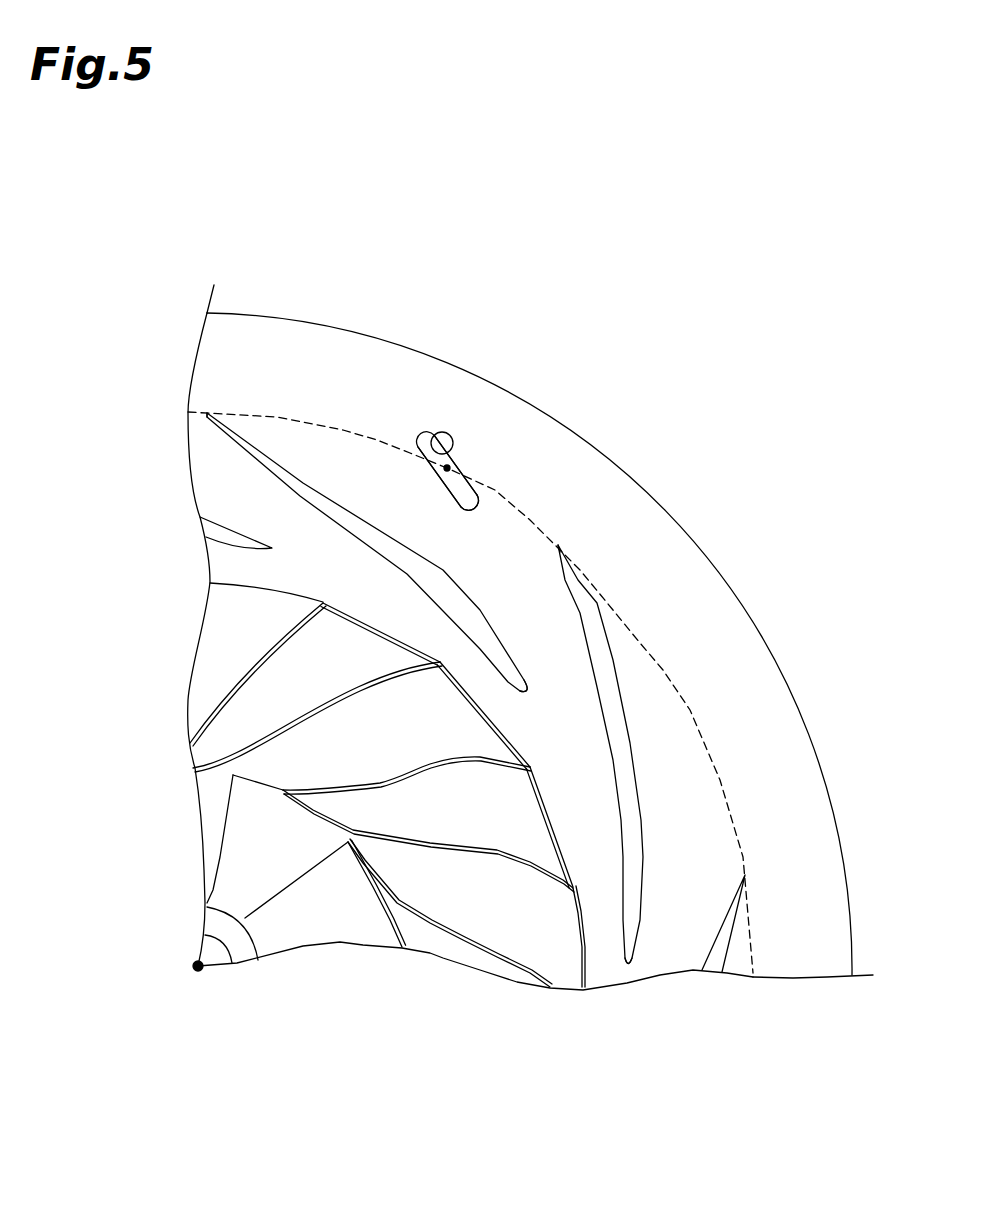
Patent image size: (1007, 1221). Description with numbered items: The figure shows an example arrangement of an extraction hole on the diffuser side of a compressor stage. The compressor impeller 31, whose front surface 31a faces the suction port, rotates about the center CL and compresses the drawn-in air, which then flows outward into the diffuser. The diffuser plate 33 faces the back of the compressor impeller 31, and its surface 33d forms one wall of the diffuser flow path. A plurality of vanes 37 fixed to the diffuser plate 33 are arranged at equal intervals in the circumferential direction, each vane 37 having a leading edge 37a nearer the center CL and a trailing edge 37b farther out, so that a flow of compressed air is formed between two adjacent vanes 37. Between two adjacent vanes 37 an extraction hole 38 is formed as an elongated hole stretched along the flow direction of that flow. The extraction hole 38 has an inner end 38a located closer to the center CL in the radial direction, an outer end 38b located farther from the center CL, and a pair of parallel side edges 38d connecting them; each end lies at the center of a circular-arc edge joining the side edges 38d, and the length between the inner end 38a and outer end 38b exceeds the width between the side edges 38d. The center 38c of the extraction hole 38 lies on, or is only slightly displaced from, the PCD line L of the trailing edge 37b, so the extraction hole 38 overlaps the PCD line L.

The compressor impeller 31 is at (444, 970).
The front surface 31a is at (580, 968).
The diffuser plate 33 is at (850, 819).
The surface of the diffuser plate 33d is at (808, 927).
The vane 37 is at (293, 483).
The leading edge 37a is at (533, 692).
The trailing edge 37b is at (207, 413).
The extraction hole 38 is at (437, 432).
The inner end 38a is at (480, 510).
The outer end 38b is at (423, 430).
The center of the extraction hole 38c is at (450, 462).
The side edge 38d is at (428, 478).
The PCD line L is at (543, 528).
The center of the diffuser plate CL is at (198, 971).